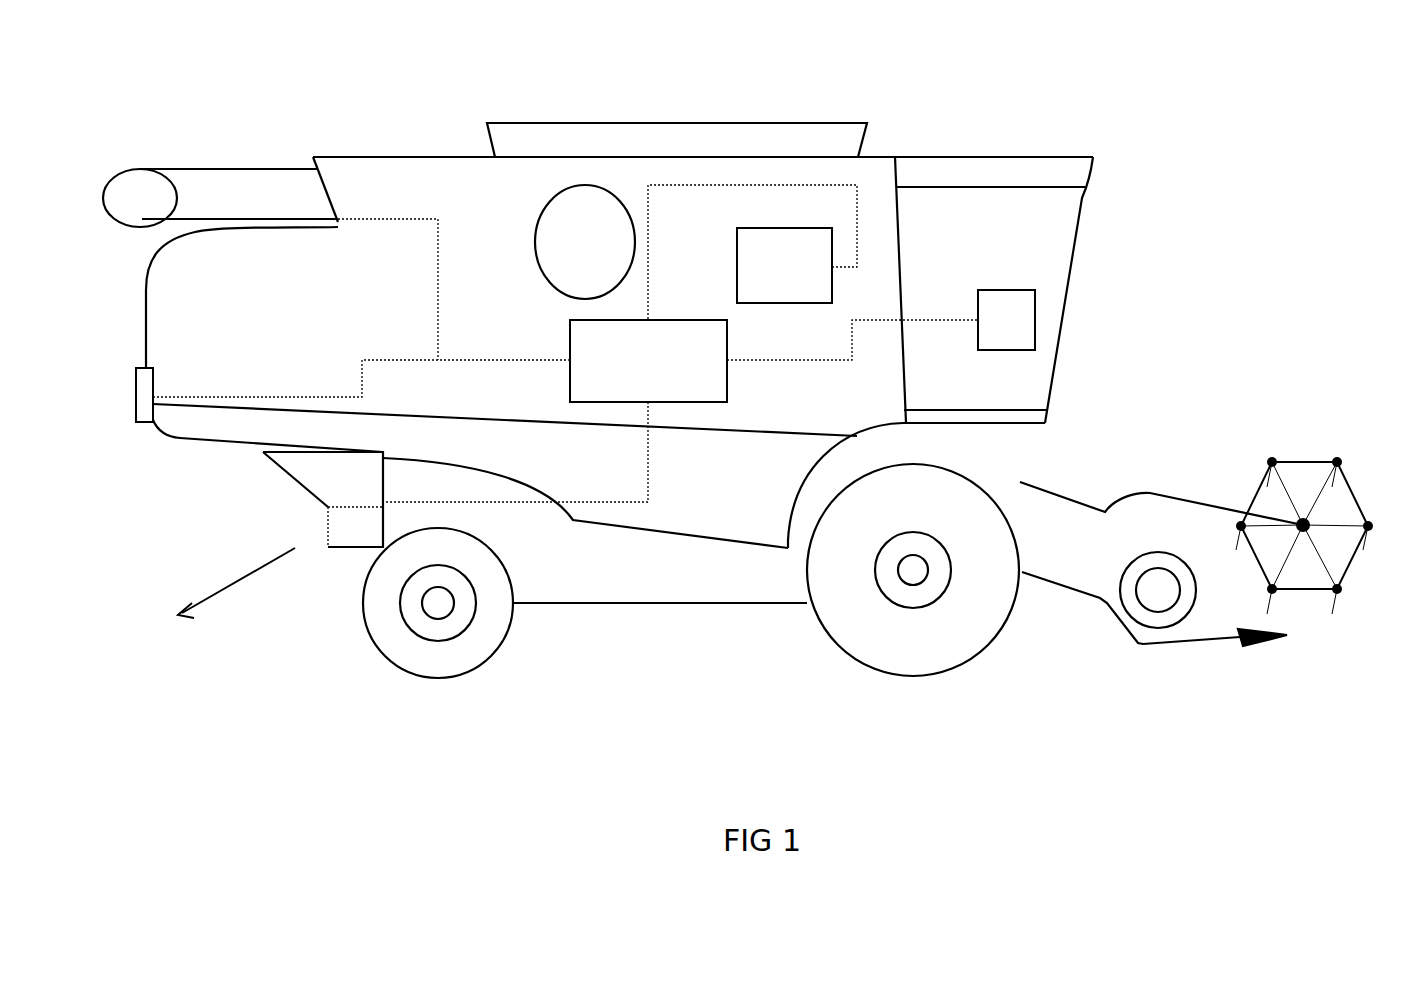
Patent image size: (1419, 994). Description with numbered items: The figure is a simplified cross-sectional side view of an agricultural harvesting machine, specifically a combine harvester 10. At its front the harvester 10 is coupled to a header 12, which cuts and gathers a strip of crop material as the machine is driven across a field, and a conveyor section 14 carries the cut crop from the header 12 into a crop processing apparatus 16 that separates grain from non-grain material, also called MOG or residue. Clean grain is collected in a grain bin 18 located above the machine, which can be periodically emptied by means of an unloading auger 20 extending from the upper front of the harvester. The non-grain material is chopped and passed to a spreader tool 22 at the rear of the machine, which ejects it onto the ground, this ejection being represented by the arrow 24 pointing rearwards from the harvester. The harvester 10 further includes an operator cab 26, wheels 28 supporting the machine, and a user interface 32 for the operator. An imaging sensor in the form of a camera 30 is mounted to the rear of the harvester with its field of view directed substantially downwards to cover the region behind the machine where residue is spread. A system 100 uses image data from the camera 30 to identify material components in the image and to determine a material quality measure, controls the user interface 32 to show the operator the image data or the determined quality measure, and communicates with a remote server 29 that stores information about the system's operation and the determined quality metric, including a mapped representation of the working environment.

The combine harvester 10 is at (1162, 132).
The header 12 is at (1290, 617).
The conveyor section 14 is at (1087, 600).
The crop processing apparatus 16 is at (692, 520).
The grain bin 18 is at (677, 122).
The unloading auger 20 is at (218, 192).
The spreader tool 22 is at (357, 550).
The arrow 24 is at (236, 595).
The operator cab 26 is at (1037, 223).
The wheels 28 is at (437, 647).
The server 29 is at (752, 252).
The imaging sensor (camera) 30 is at (134, 395).
The user interface 32 is at (1035, 320).
The system 100 is at (555, 411).